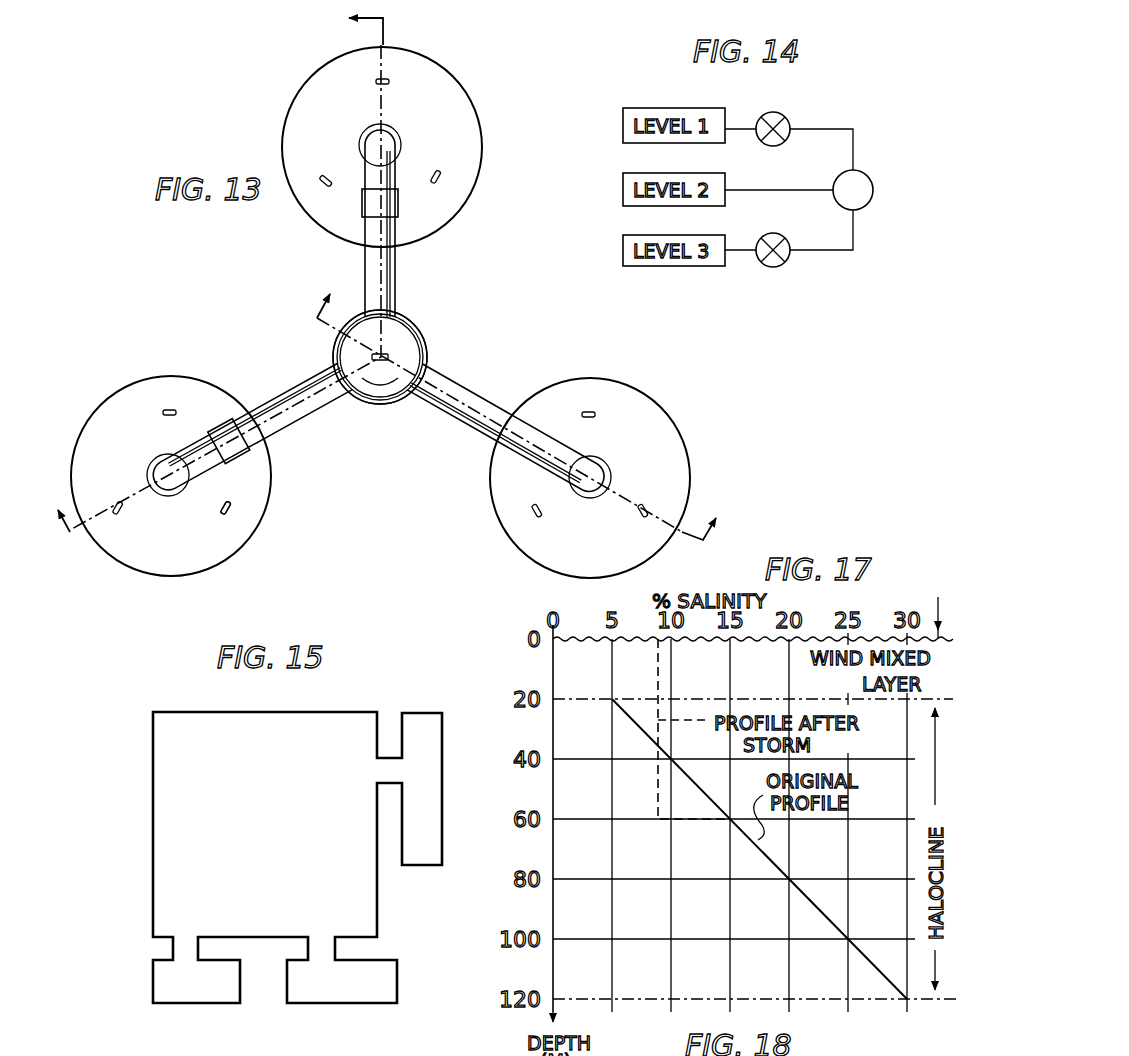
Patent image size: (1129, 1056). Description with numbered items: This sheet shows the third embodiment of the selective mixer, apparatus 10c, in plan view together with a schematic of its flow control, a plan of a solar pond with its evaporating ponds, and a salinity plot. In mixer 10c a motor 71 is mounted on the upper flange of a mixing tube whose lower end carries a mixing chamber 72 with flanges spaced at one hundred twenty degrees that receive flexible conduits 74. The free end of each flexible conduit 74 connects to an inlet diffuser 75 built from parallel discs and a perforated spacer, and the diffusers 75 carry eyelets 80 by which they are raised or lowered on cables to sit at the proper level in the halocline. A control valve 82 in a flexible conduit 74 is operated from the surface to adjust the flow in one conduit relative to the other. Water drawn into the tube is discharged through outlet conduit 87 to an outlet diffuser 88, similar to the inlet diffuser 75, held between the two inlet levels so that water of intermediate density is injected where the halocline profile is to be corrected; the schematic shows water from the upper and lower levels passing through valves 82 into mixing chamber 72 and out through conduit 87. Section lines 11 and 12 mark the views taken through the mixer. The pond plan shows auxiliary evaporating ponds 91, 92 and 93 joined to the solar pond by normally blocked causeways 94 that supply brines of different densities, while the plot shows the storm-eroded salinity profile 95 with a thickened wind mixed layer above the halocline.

In FIG. 13, the mixer apparatus 10c is at (374, 410).
In FIG. 14, the mixer apparatus 10c is at (838, 104).
In FIG. 13, the section line 11 is at (212, 270).
In FIG. 13, the section line 12 is at (528, 403).
In FIG. 13, the motor 71 is at (405, 330).
In FIG. 14, the mixing chamber 72 is at (870, 177).
In FIG. 13, the flexible conduit 74 is at (396, 268).
In FIG. 14, the flexible conduit 74 is at (835, 135).
In FIG. 13, the inlet diffuser 75 is at (490, 125).
In FIG. 13, the eyelet 80 is at (232, 512).
In FIG. 13, the control valve 82 is at (230, 432).
In FIG. 14, the control valve 82 is at (786, 116).
In FIG. 13, the outlet conduit 87 is at (475, 422).
In FIG. 14, the outlet conduit 87 is at (822, 195).
In FIG. 13, the outlet diffuser 88 is at (548, 570).
In FIG. 15, the auxiliary evaporating pond 91 is at (428, 733).
In FIG. 15, the auxiliary evaporating pond 92 is at (385, 971).
In FIG. 15, the auxiliary evaporating pond 93 is at (213, 990).
In FIG. 15, the causeway 94 is at (388, 765).
In FIG. 17, the profile after storm 95 is at (655, 812).